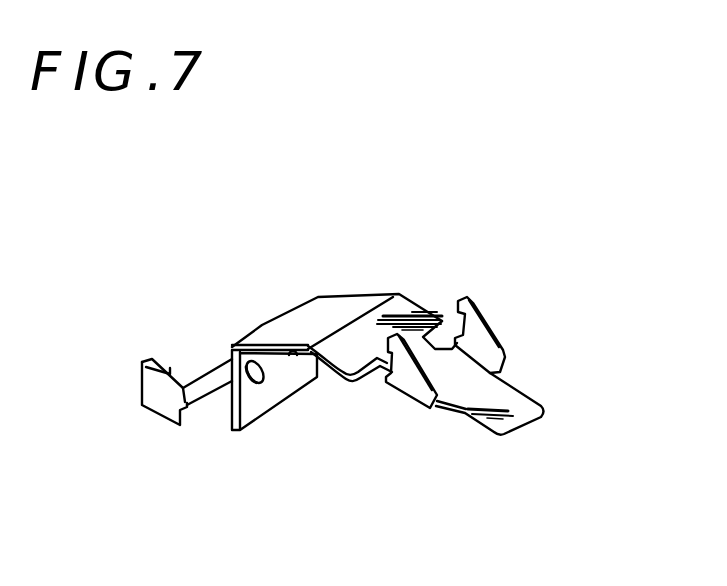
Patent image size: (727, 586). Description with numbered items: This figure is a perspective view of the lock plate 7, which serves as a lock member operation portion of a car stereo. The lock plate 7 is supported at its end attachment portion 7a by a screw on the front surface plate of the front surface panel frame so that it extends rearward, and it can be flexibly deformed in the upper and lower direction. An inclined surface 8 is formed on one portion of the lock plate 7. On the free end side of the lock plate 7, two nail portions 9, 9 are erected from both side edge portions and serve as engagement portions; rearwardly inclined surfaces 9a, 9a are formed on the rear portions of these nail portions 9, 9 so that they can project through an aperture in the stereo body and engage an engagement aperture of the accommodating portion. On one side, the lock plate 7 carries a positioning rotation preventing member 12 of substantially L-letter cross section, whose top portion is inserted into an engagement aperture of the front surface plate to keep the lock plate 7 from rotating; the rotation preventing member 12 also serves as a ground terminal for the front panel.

The lock plate 7 is at (410, 308).
The end attachment portion 7a is at (265, 398).
The inclined surface 8 is at (287, 310).
The nail portion 9 is at (412, 375).
The rearwardly inclined surface 9a is at (428, 383).
The rotation preventing member 12 is at (155, 398).